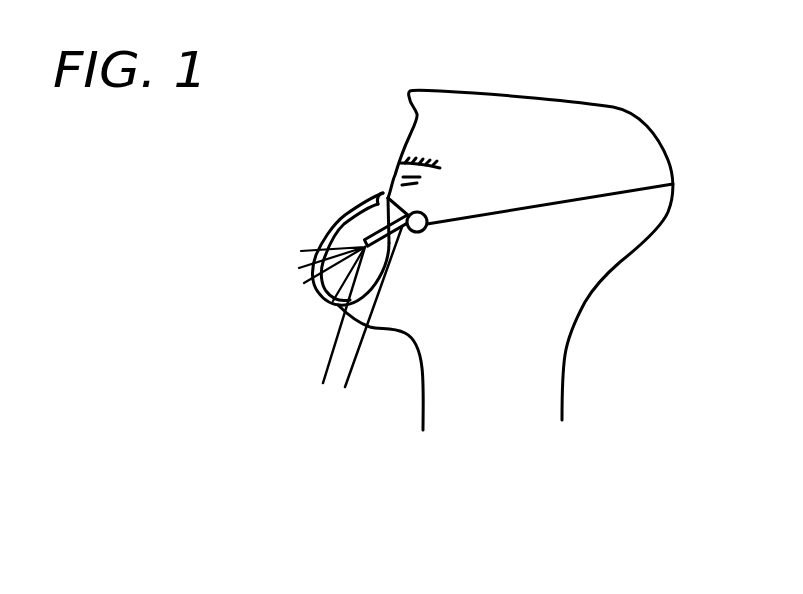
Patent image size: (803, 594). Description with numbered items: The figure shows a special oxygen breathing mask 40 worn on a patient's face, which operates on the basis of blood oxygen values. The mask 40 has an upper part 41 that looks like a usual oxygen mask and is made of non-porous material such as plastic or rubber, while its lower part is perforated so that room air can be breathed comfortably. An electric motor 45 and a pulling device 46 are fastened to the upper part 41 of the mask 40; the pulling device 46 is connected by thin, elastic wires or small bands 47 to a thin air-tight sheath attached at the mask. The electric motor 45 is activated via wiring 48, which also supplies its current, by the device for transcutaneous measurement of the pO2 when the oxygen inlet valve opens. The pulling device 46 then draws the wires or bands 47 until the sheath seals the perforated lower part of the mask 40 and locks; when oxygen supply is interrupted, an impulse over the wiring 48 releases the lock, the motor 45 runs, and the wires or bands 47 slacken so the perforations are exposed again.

The oxygen mask 40 is at (316, 299).
The upper part 41 is at (350, 207).
The electric motor 45 is at (428, 213).
The pulling device 46 is at (389, 243).
The wires or bands 47 is at (303, 285).
The wiring 48 is at (350, 372).